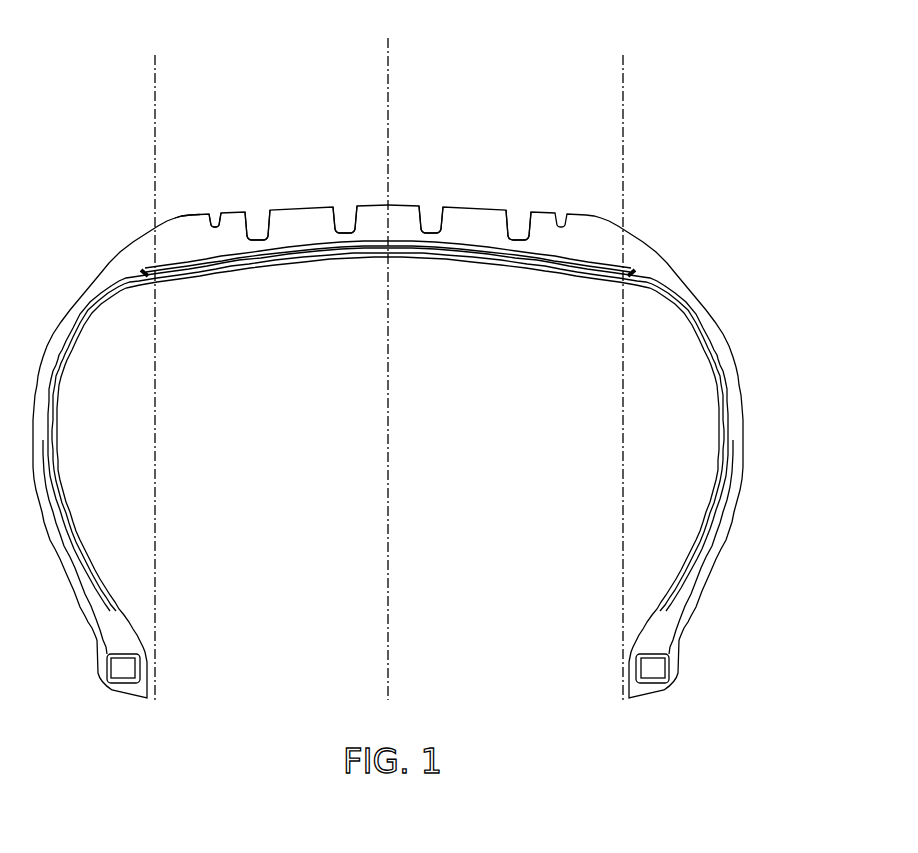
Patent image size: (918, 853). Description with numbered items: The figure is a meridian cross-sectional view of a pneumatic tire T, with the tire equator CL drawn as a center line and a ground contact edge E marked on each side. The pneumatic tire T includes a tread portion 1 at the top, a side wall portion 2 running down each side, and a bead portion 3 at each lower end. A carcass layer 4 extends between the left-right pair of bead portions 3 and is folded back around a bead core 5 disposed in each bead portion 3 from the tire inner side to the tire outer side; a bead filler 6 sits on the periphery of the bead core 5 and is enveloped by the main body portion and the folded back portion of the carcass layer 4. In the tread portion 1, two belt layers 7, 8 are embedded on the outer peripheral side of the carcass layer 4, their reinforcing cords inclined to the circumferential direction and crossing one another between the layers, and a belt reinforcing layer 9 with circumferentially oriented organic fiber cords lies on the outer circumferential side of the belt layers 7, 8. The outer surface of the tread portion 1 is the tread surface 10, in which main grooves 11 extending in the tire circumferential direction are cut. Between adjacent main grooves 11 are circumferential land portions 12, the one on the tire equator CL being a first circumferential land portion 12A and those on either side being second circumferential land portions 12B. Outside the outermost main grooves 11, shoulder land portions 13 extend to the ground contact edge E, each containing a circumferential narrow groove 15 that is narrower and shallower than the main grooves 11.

The tread portion 1 is at (488, 190).
The tread surface 10 is at (373, 152).
The side wall portion 2 is at (740, 405).
The bead portion 3 is at (687, 677).
The carcass layer 4 is at (483, 260).
The bead core 5 is at (652, 673).
The bead filler 6 is at (667, 620).
The belt layer 7 is at (555, 257).
The belt layer 8 is at (587, 262).
The belt reinforcing layer 9 is at (630, 270).
The main groove 11 is at (258, 225).
The circumferential land portion 12 is at (466, 152).
The first circumferential land portion 12A is at (408, 203).
The second circumferential land portion 12B is at (468, 203).
The shoulder land portion 13 is at (188, 213).
The circumferential narrow groove 15 is at (215, 215).
The pneumatic tire T is at (687, 172).
The tire equator CL is at (392, 355).
The ground contact edge E is at (390, 364).